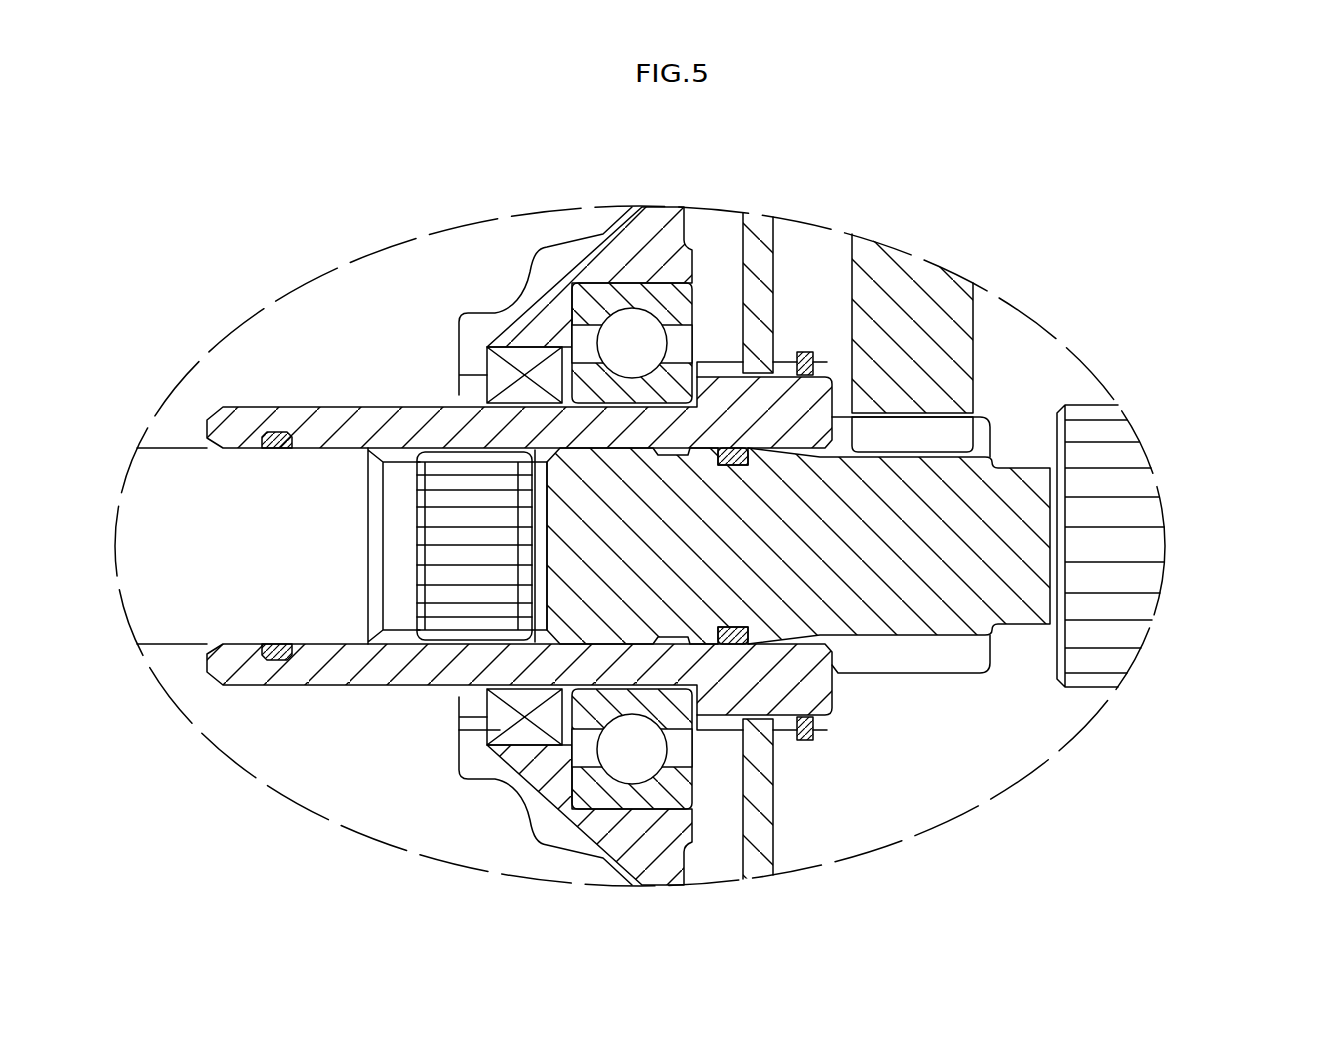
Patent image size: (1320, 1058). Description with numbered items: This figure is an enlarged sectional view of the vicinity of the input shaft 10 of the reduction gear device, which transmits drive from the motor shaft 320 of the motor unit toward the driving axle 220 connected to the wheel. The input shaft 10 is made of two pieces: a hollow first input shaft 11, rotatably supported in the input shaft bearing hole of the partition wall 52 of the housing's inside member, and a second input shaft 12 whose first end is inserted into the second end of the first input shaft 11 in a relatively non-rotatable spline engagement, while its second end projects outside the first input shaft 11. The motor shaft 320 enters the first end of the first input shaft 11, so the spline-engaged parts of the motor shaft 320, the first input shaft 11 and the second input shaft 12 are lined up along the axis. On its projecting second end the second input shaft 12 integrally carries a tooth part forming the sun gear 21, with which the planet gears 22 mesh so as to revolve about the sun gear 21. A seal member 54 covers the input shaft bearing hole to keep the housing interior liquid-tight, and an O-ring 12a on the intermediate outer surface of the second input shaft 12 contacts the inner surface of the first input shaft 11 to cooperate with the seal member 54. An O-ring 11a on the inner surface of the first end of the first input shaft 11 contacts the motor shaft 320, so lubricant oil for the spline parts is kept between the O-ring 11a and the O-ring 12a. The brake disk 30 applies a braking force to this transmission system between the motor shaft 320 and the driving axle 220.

The input shaft 10 is at (519, 487).
The first input shaft 11 is at (363, 428).
The O-ring 11a is at (287, 652).
The second input shaft 12 is at (723, 549).
The O-ring 12a is at (742, 645).
The sun gear 21 is at (985, 433).
The planet gears 22 is at (958, 308).
The driving axle 220 is at (1127, 457).
The brake disk 30 is at (763, 247).
The partition wall 52 is at (635, 230).
The seal member 54 is at (468, 730).
The motor shaft 320 is at (268, 549).